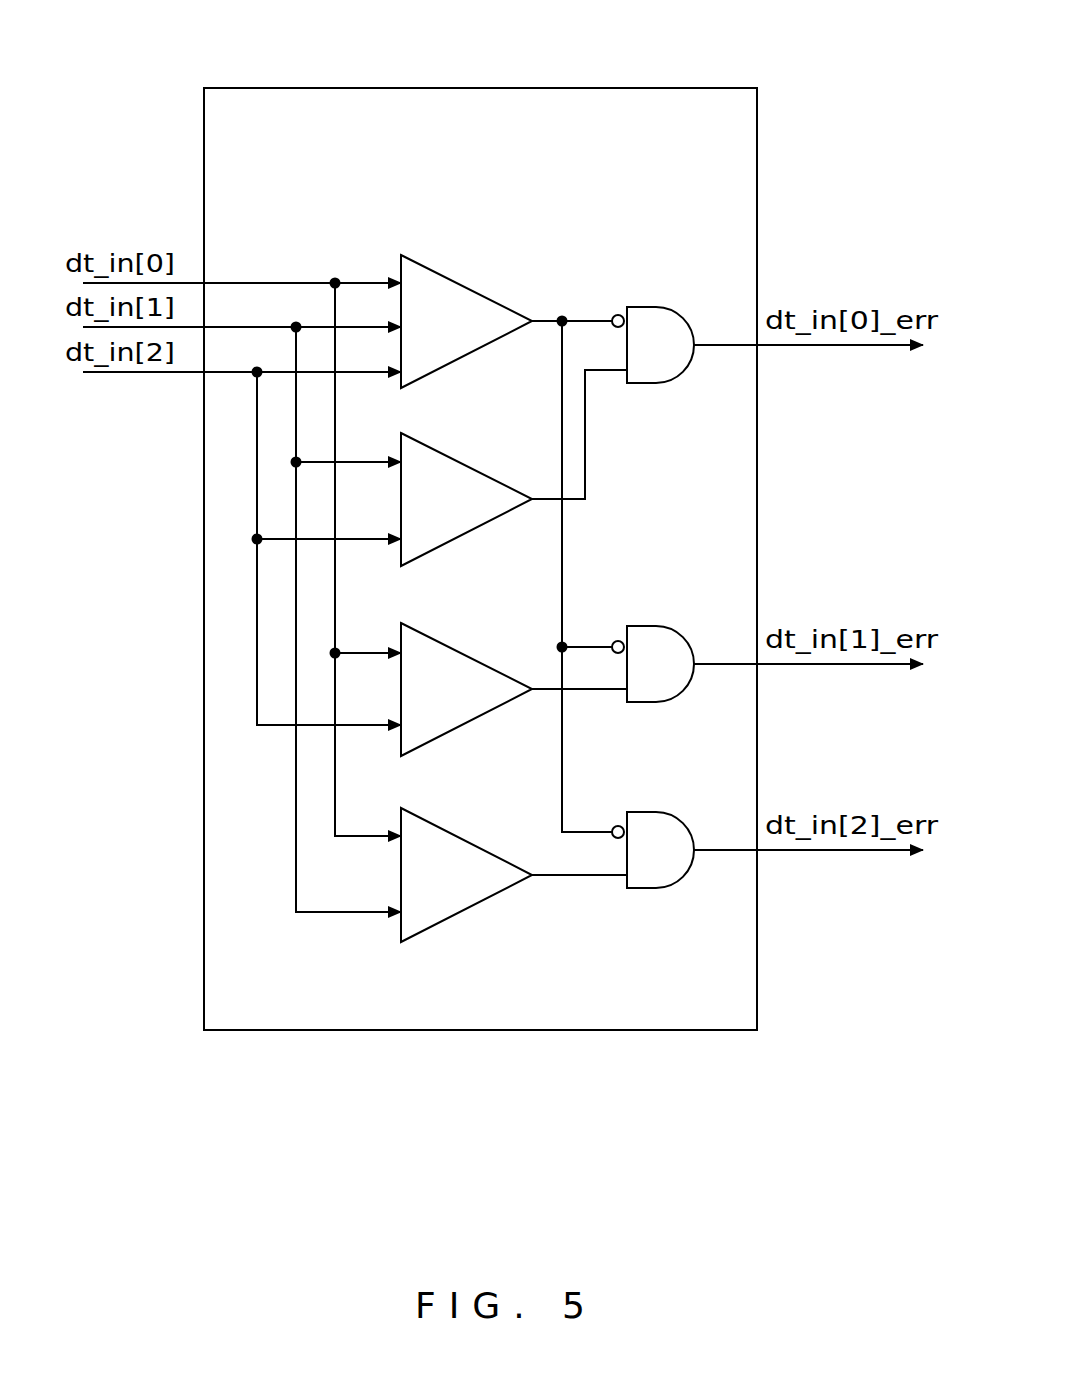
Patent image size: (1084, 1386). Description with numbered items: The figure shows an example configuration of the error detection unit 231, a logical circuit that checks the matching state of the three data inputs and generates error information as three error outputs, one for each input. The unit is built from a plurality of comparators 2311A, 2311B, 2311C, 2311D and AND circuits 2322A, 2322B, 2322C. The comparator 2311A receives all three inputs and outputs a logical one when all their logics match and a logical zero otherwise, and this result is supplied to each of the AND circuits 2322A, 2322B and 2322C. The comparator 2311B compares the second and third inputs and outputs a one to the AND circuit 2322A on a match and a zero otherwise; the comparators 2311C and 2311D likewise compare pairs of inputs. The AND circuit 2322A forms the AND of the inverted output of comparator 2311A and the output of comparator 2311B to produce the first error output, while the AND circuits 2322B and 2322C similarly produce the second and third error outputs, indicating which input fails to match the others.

The error detection unit 231 is at (488, 87).
The comparator 2311A is at (445, 273).
The comparator 2311B is at (428, 445).
The comparator 2311C is at (427, 636).
The comparator 2311D is at (432, 822).
The AND circuit 2322A is at (638, 305).
The AND circuit 2322B is at (645, 626).
The AND circuit 2322C is at (658, 812).